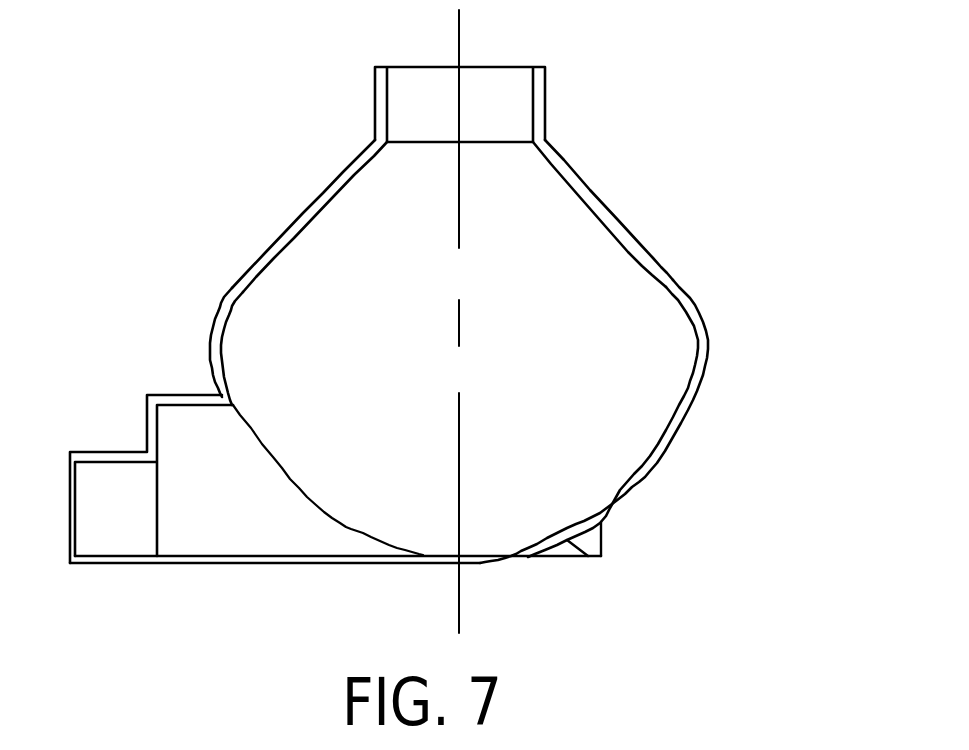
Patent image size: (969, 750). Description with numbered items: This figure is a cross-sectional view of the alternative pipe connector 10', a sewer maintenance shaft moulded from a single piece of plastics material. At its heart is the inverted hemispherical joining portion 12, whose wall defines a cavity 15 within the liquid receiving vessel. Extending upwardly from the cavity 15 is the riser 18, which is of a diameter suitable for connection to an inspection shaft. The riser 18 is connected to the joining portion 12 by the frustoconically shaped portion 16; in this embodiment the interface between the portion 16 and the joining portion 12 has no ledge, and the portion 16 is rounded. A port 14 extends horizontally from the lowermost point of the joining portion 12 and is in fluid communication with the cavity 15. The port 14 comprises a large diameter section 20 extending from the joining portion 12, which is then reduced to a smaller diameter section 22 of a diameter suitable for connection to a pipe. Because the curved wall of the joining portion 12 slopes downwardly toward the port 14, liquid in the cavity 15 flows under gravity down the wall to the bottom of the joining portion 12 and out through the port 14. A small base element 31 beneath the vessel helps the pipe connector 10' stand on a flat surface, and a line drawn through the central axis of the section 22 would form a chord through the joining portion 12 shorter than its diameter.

The pipe connector 10' is at (469, 353).
The joining portion 12 is at (703, 385).
The port 14 is at (325, 476).
The cavity 15 is at (532, 415).
The frustoconically shaped portion 16 is at (610, 208).
The riser 18 is at (545, 93).
The large diameter section 20 is at (222, 565).
The smaller diameter section 22 is at (108, 565).
The wedge support 31 is at (602, 540).